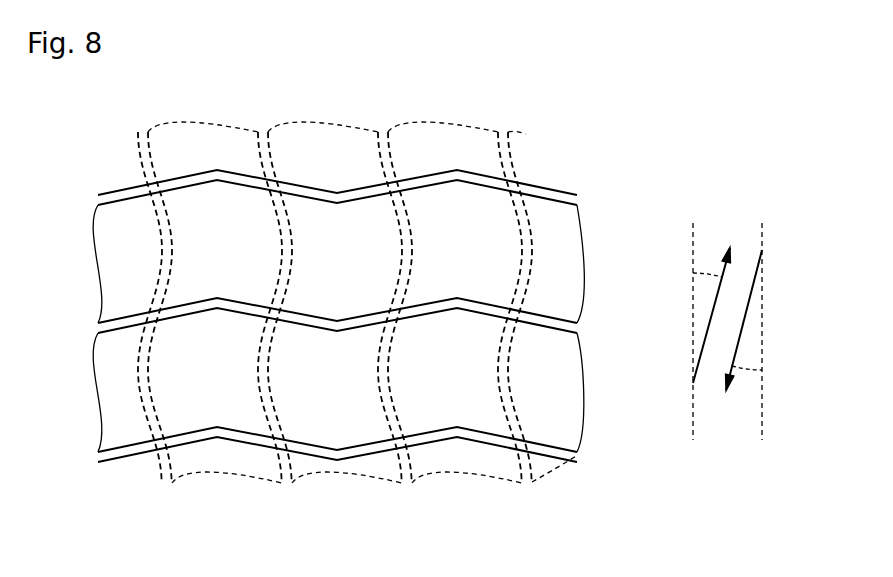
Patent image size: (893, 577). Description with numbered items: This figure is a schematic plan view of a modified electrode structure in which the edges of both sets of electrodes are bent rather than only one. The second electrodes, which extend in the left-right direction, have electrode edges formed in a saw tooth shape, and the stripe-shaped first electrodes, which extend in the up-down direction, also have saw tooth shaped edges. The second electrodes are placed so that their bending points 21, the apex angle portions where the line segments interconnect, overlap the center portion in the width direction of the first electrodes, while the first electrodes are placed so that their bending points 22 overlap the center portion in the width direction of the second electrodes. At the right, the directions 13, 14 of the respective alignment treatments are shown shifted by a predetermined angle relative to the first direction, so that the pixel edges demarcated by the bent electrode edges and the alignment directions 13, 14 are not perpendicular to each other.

The direction of alignment treatment 13 is at (708, 318).
The direction of alignment treatment 14 is at (745, 322).
The bending point 21 is at (336, 193).
The bending point 22 is at (424, 245).